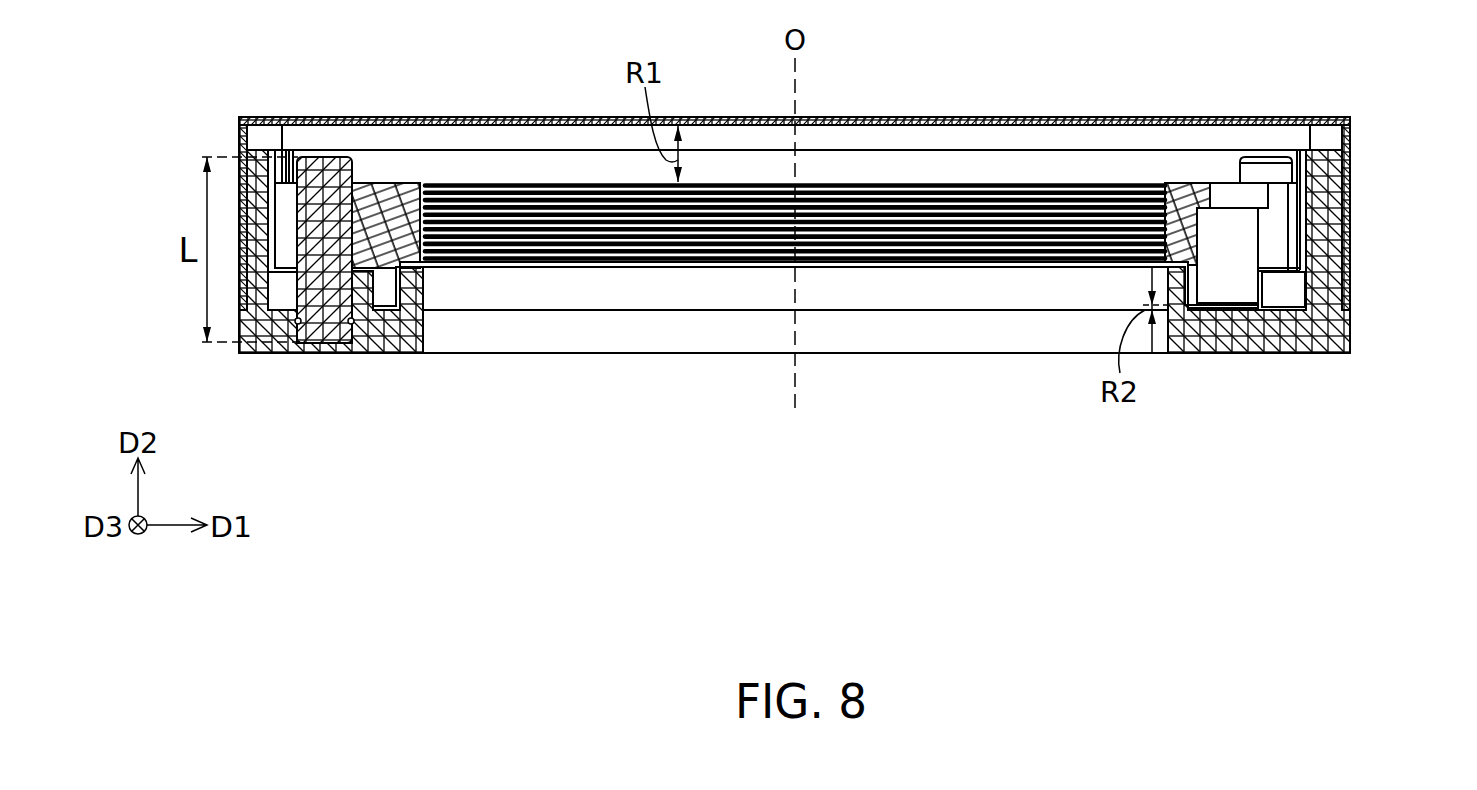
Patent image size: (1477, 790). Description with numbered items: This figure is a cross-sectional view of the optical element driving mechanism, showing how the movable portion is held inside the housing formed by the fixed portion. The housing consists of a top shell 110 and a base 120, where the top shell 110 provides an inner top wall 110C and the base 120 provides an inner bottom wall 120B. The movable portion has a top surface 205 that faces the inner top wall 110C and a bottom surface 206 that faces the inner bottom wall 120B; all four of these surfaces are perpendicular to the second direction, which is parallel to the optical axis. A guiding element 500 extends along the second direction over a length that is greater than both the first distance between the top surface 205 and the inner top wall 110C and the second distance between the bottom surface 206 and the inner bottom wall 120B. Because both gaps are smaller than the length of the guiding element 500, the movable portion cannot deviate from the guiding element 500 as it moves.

The top shell 110 is at (1354, 140).
The inner top wall 110C is at (929, 130).
The base 120 is at (794, 302).
The inner bottom wall 120B is at (358, 340).
The top surface 205 is at (380, 183).
The bottom surface 206 is at (402, 312).
The guiding element 500 is at (318, 167).